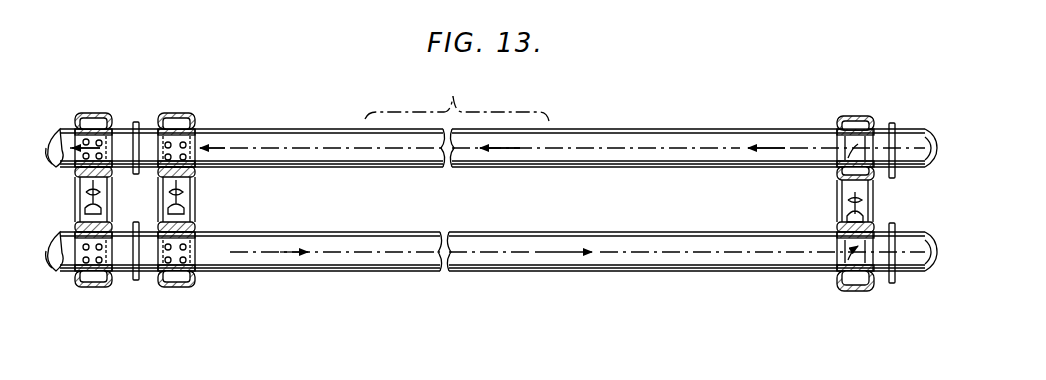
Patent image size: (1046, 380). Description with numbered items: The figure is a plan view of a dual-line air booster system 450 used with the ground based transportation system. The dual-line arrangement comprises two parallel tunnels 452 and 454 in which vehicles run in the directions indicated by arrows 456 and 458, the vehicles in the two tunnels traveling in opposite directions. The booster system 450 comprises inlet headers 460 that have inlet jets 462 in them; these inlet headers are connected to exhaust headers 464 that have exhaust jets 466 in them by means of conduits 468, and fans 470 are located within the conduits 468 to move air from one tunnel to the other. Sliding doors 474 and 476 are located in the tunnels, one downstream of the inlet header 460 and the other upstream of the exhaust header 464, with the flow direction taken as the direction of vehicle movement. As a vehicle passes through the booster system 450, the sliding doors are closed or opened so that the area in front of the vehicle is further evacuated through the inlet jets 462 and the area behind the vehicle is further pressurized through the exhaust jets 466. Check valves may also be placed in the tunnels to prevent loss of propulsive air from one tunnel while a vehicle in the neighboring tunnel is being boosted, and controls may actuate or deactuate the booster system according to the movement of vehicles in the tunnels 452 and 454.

The booster system 450 is at (374, 276).
The tunnel 452 is at (660, 258).
The tunnel 454 is at (657, 142).
The arrow 456 is at (543, 253).
The arrow 458 is at (566, 150).
The inlet header 460 is at (188, 122).
The inlet jet 462 is at (193, 140).
The exhaust header 464 is at (178, 290).
The exhaust jet 466 is at (196, 276).
The conduit 468 is at (196, 172).
The fan 470 is at (160, 186).
The sliding door 474 is at (137, 282).
The sliding door 476 is at (133, 122).